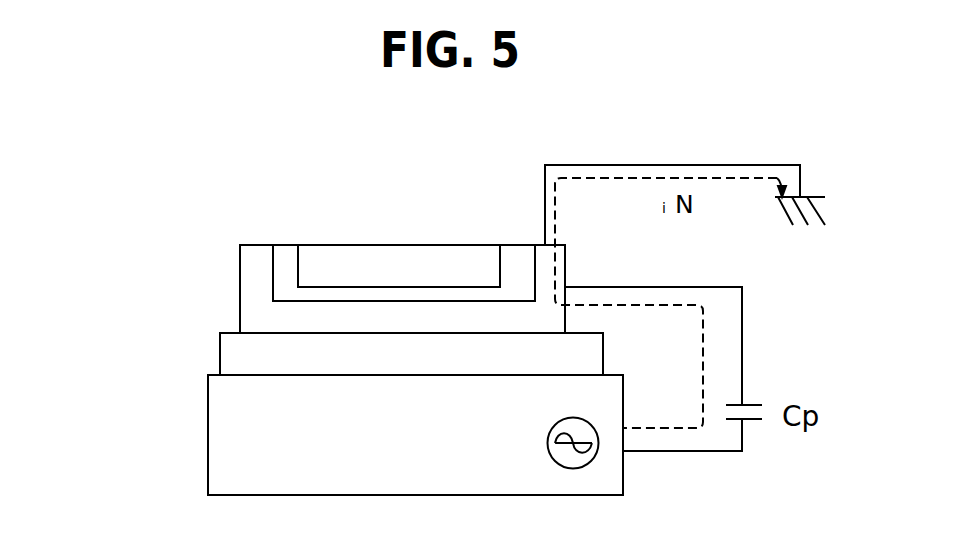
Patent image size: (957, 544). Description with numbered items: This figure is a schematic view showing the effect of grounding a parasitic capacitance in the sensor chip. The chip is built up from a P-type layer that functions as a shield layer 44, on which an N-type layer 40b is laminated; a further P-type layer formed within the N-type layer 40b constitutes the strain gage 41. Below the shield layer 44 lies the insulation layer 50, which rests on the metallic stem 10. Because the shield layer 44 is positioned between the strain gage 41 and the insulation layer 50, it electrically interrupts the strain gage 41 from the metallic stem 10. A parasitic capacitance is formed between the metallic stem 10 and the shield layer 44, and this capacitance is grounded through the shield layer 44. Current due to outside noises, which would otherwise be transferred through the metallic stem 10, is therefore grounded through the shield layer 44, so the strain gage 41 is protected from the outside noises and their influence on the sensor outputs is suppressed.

The metallic stem 10 is at (208, 435).
The insulation layer 50 is at (220, 353).
The shield layer 44 is at (252, 287).
The N-type layer 40b is at (283, 247).
The strain gage 41 is at (357, 257).